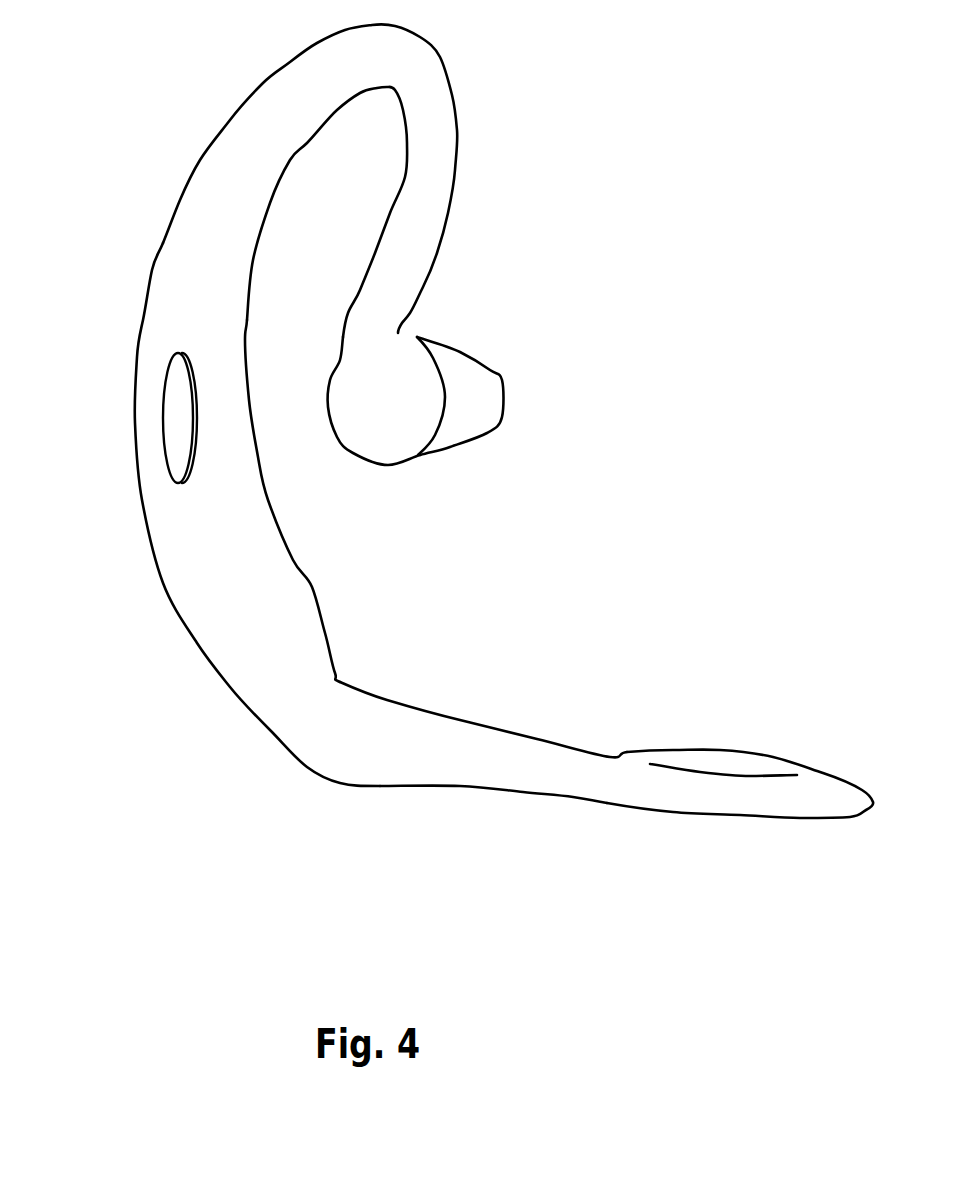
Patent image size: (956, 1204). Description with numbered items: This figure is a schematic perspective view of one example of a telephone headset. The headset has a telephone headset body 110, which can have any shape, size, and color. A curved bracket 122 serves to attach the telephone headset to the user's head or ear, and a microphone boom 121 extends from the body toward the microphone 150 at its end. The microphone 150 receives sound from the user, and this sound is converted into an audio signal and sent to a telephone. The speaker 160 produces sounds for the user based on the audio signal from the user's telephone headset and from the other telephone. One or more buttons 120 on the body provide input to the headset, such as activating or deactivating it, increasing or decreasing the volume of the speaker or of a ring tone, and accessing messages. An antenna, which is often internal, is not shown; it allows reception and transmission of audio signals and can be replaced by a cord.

The telephone headset body 110 is at (163, 240).
The button 120 is at (163, 400).
The microphone boom 121 is at (460, 718).
The bracket 122 is at (438, 55).
The microphone 150 is at (717, 748).
The speaker 160 is at (503, 405).